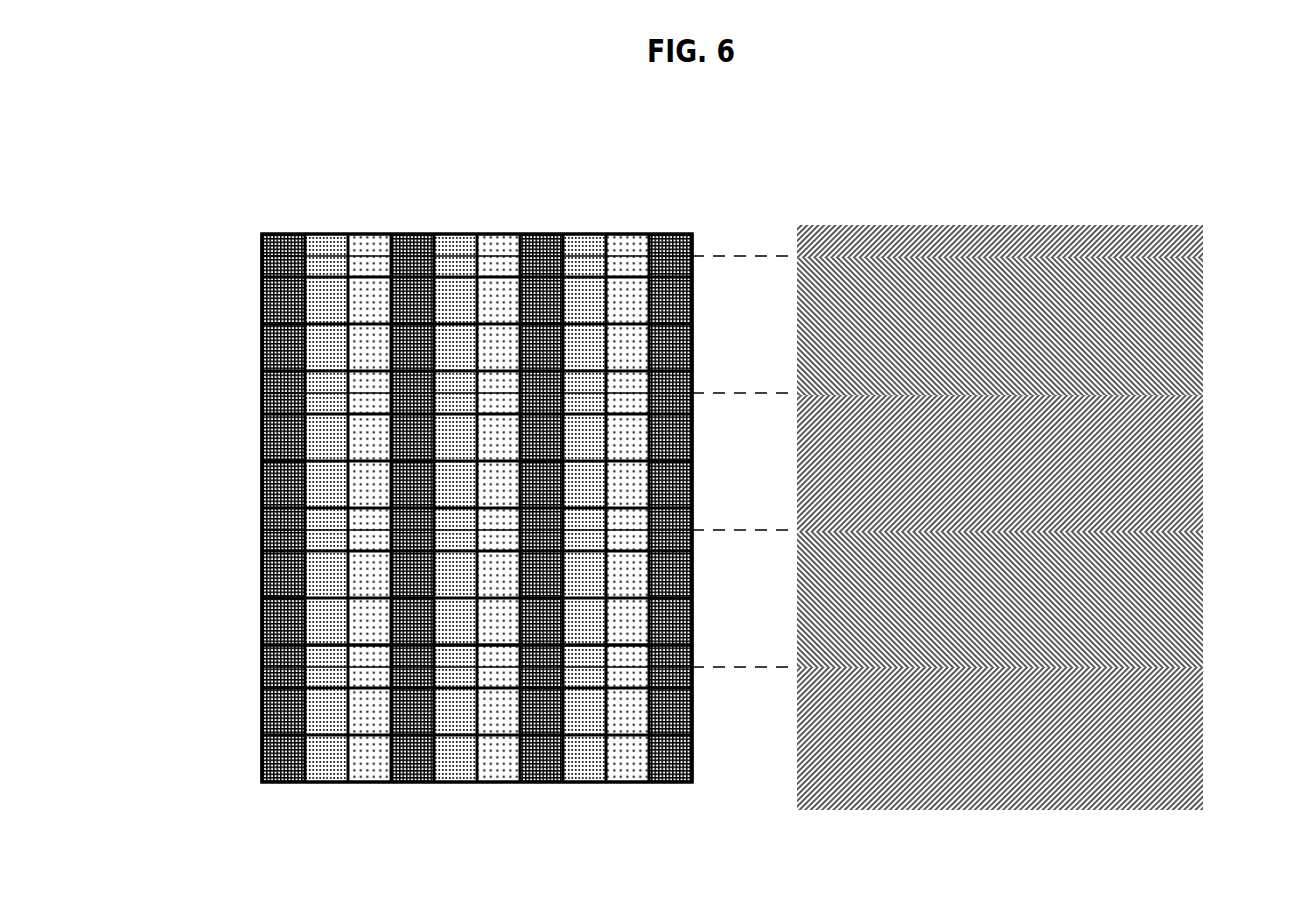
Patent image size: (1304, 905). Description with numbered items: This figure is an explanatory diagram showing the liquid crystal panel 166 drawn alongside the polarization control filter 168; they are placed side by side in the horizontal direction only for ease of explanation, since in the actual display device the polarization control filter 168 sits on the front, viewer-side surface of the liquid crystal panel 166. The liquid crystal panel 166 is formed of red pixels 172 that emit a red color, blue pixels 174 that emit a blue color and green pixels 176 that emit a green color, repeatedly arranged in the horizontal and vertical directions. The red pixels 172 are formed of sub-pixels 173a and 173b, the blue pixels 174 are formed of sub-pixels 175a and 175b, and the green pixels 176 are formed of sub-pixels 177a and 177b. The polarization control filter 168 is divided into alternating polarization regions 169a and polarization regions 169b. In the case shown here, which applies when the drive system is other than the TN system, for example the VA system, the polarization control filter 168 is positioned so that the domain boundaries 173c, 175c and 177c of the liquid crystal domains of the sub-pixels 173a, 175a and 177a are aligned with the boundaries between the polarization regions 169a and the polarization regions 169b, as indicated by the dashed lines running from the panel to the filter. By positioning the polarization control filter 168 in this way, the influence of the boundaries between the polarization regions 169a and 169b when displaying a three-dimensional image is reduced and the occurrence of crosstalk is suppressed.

The liquid crystal panel 166 is at (500, 178).
The polarization control filter 168 is at (1003, 170).
The red pixels 172 is at (160, 232).
The sub-pixel 173a is at (276, 243).
The sub-pixel 173b is at (276, 346).
The domain boundary 173c is at (264, 257).
The blue pixels 174 is at (160, 370).
The sub-pixel 175a is at (323, 387).
The sub-pixel 175b is at (323, 488).
The domain boundary 175c is at (264, 394).
The green pixels 176 is at (160, 506).
The sub-pixel 177a is at (365, 525).
The sub-pixel 177b is at (365, 624).
The domain boundary 177c is at (264, 531).
The polarization regions 169a is at (1205, 327).
The polarization regions 169b is at (1205, 242).